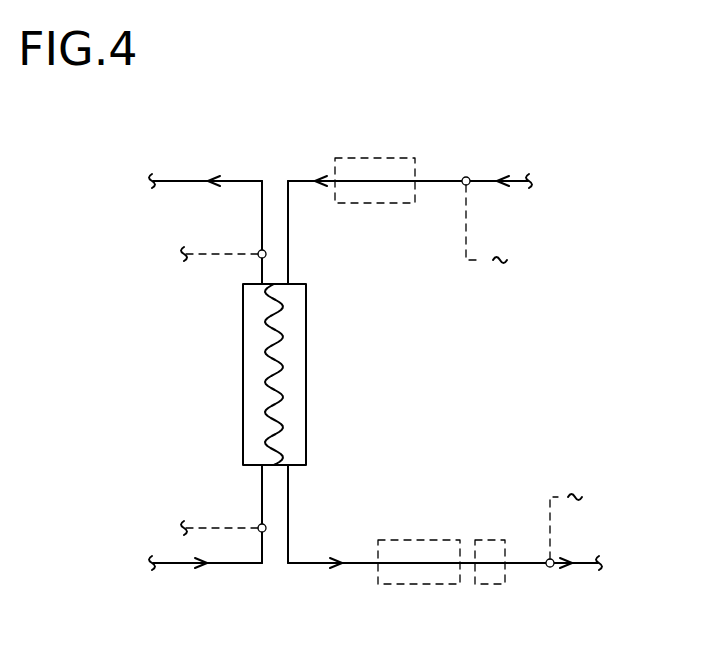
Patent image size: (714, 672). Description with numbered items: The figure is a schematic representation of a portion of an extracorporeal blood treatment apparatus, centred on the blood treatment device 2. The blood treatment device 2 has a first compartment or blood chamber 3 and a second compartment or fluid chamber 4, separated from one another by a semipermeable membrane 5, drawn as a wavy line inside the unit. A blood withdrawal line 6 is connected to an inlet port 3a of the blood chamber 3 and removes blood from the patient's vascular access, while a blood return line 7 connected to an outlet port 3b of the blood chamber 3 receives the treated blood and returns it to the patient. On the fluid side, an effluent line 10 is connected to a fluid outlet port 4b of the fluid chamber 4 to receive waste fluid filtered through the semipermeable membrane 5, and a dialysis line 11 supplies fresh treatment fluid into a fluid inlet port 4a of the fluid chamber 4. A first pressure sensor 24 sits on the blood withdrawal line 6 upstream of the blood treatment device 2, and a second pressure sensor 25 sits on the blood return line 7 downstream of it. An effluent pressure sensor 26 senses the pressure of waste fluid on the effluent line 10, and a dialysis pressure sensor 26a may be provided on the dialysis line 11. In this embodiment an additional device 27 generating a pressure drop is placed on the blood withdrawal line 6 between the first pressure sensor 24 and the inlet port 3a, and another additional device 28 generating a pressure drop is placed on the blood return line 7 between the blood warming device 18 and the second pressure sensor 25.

The blood treatment device 2 is at (313, 338).
The blood chamber 3 is at (293, 397).
The inlet port 3a is at (288, 284).
The outlet port 3b is at (288, 465).
The fluid chamber 4 is at (257, 367).
The fluid inlet port 4a is at (262, 467).
The fluid outlet port 4b is at (260, 284).
The semipermeable membrane 5 is at (275, 383).
The blood withdrawal line 6 is at (483, 181).
The blood return line 7 is at (523, 563).
The effluent line 10 is at (185, 181).
The dialysis line 11 is at (227, 563).
The blood warming device 18 is at (403, 538).
The first pressure sensor 24 is at (466, 177).
The second pressure sensor 25 is at (553, 560).
The effluent pressure sensor 26 is at (265, 250).
The dialysis pressure sensor 26a is at (264, 532).
The additional device 27 is at (390, 157).
The additional device 28 is at (490, 538).